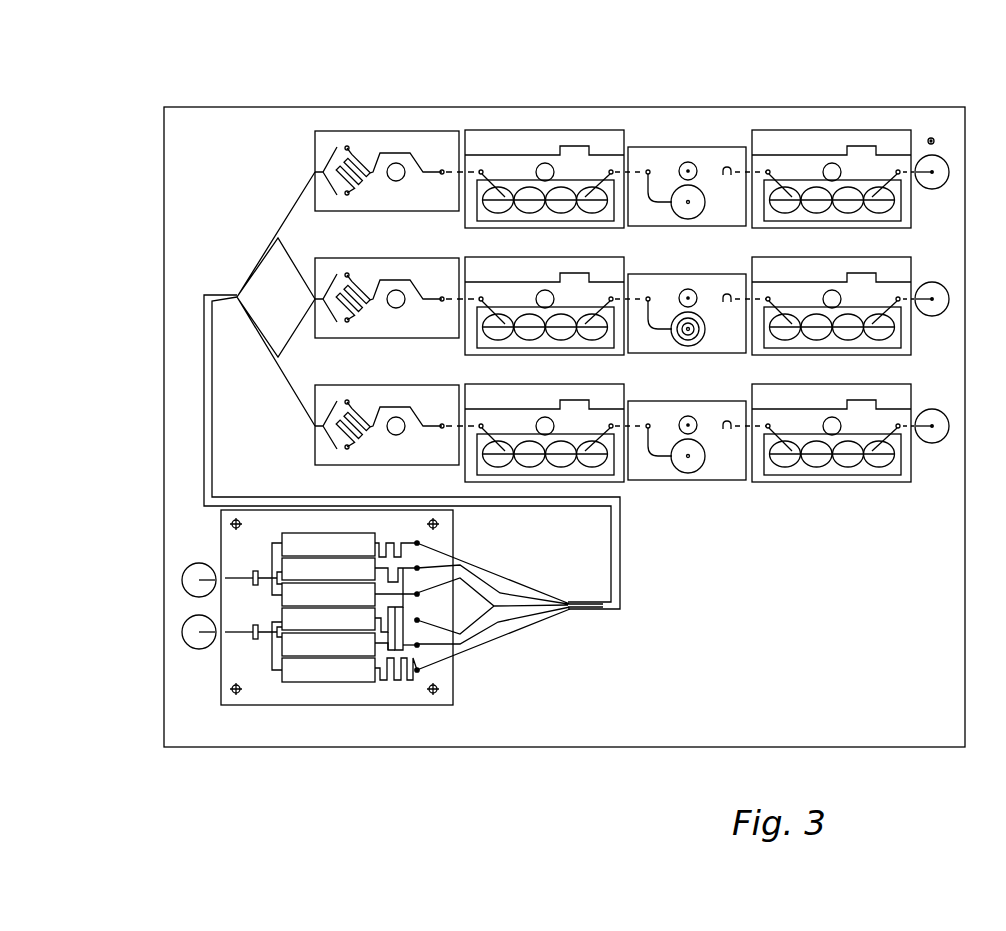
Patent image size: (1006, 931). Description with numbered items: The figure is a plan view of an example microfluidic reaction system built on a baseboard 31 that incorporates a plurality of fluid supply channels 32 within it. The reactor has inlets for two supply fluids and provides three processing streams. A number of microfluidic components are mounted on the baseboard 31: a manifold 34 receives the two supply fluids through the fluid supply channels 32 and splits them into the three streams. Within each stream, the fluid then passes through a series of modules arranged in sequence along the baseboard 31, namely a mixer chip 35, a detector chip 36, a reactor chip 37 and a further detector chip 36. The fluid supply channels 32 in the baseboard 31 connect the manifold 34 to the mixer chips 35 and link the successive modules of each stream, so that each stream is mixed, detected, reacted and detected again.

The baseboard 31 is at (939, 728).
The fluid supply channels 32 is at (207, 297).
The manifold 34 is at (313, 695).
The mixer chip 35 is at (383, 94).
The detector chip 36 is at (538, 93).
The reactor chip 37 is at (694, 93).